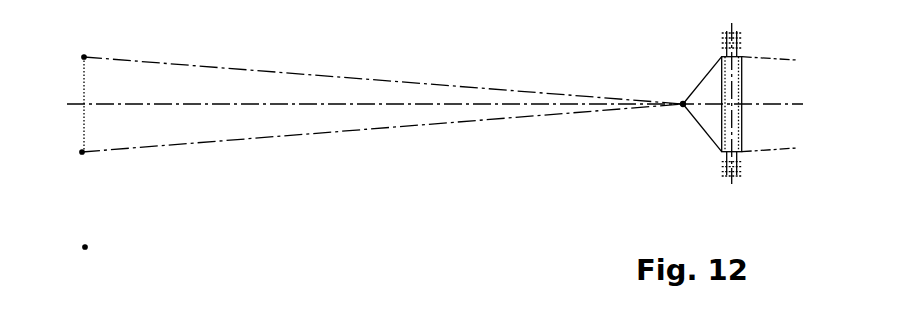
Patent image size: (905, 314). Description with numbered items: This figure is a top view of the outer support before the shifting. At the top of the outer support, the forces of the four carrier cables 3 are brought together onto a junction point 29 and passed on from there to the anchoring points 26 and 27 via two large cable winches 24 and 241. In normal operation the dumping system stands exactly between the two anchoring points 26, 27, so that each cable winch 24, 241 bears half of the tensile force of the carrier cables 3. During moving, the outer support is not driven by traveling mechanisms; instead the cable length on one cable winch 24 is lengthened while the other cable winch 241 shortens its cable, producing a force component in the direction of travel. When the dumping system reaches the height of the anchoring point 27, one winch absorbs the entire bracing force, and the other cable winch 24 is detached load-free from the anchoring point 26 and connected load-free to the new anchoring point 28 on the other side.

The carrier cables 3 is at (754, 60).
The cable winch 24 is at (332, 77).
The cable winch 241 is at (360, 130).
The anchoring point 26 is at (84, 57).
The anchoring point 27 is at (82, 152).
The new anchoring point 28 is at (85, 247).
The junction point 29 is at (683, 104).